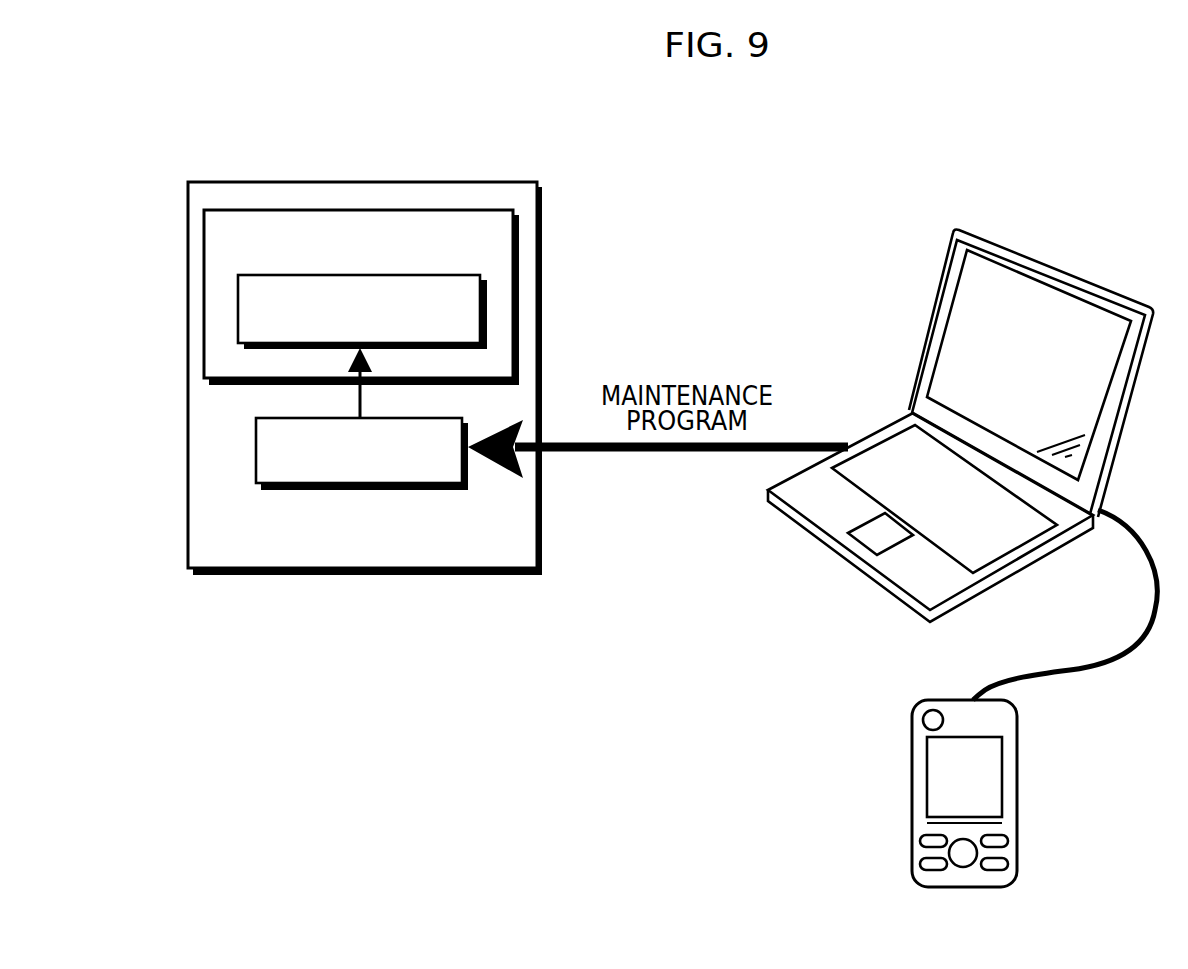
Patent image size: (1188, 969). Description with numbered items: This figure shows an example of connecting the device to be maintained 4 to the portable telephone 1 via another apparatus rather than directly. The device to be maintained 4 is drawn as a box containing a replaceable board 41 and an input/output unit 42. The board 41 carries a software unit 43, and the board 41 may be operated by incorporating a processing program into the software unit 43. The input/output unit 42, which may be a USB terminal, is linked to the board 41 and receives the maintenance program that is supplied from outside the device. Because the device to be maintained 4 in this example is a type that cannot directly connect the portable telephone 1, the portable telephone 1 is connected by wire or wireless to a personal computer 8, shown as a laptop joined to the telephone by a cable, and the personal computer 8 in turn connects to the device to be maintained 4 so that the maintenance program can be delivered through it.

The device to be maintained 4 is at (473, 182).
The board 41 is at (521, 243).
The input/output unit 42 is at (256, 440).
The software unit 43 is at (238, 286).
The personal computer 8 is at (1113, 291).
The portable telephone 1 is at (912, 788).